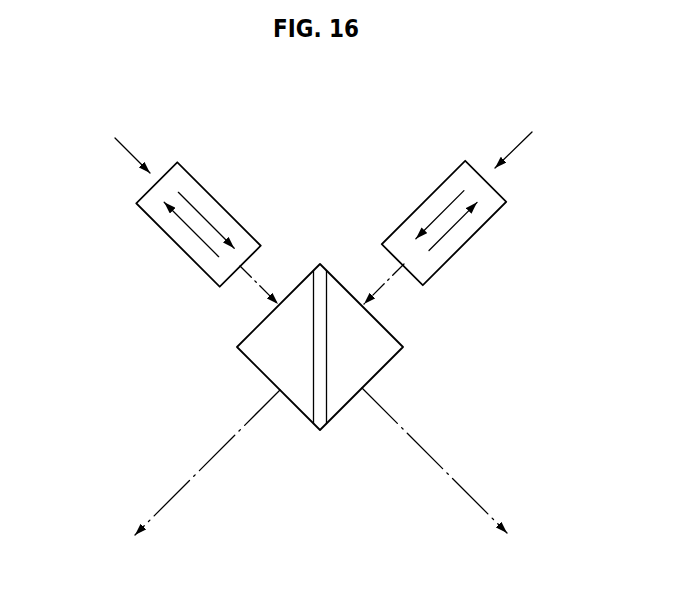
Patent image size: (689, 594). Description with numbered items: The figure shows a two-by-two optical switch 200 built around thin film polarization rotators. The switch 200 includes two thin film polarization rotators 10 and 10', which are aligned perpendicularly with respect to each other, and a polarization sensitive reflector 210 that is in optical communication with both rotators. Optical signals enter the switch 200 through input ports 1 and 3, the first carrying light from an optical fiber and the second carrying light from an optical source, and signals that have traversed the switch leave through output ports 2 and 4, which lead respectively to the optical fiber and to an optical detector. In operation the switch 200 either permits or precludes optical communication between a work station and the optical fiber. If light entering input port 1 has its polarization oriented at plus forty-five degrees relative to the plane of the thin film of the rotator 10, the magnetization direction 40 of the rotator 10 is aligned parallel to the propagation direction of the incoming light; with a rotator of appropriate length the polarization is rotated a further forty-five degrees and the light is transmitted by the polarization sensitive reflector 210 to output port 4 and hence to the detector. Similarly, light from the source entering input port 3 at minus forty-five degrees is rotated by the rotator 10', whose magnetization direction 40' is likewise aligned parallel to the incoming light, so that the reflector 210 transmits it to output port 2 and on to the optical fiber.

The 2×2 switch 200 is at (334, 121).
The thin film polarization rotator 10 is at (187, 224).
The magnetization direction 40 is at (213, 213).
The thin film polarization rotator 10' is at (459, 223).
The magnetization direction 40' is at (421, 209).
The polarization sensitive reflector 210 is at (340, 410).
The input port 1 is at (123, 142).
The output port 2 is at (198, 474).
The input port 3 is at (527, 140).
The output port 4 is at (449, 471).